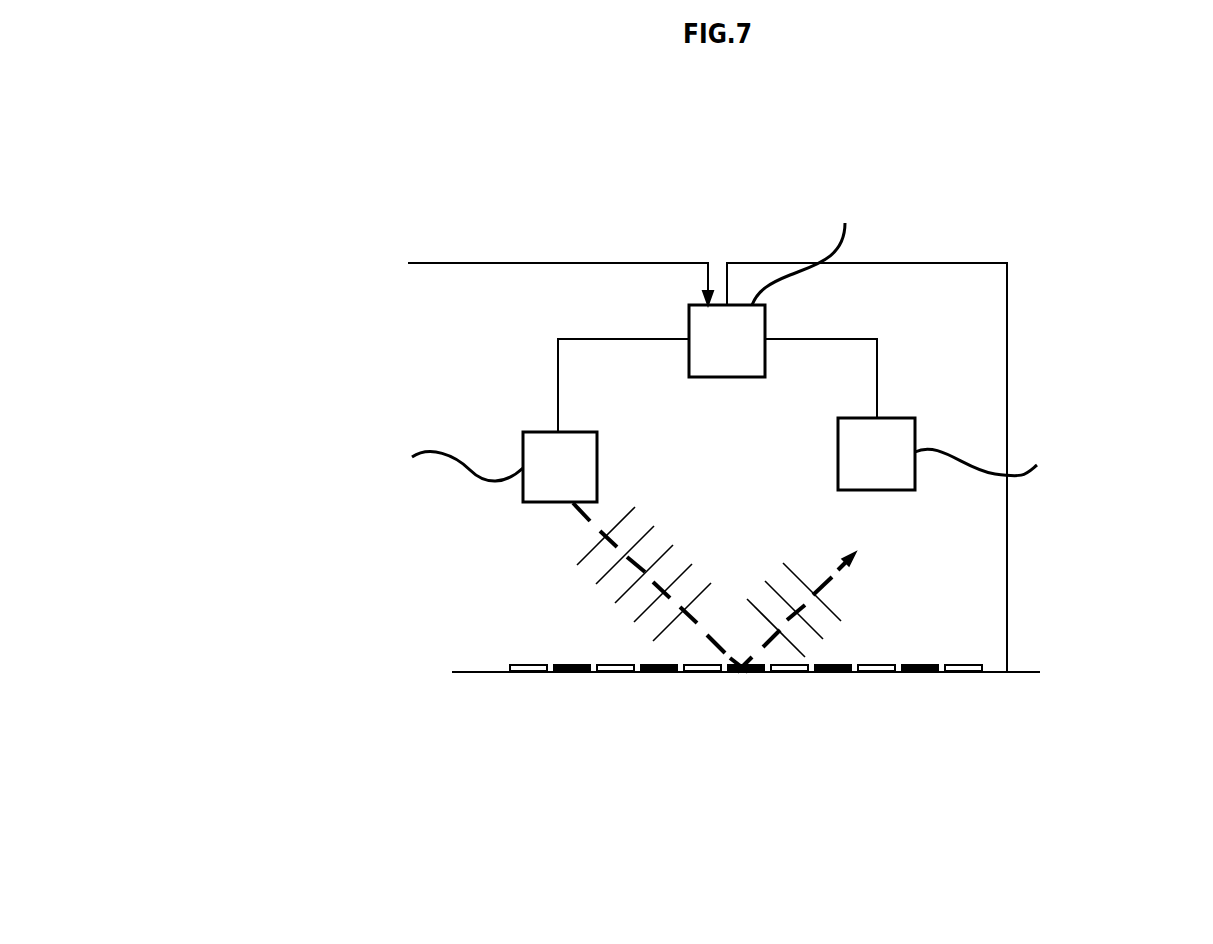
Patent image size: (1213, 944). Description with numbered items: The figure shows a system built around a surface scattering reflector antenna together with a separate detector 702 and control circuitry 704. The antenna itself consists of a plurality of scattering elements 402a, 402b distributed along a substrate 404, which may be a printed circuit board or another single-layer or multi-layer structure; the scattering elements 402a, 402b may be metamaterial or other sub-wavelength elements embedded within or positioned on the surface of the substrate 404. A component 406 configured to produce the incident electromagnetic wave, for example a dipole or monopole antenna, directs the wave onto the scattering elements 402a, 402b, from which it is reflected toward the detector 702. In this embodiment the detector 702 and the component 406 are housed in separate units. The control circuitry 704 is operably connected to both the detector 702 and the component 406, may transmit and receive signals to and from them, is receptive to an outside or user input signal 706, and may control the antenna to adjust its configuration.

The signal 706 is at (532, 276).
The control circuitry 704 is at (858, 279).
The component configured to produce the incident electromagnetic wave 406 is at (382, 457).
The detector 702 is at (1007, 454).
The substrate 404 is at (468, 672).
The scattering elements 402a is at (615, 672).
The scattering elements 402b is at (745, 672).